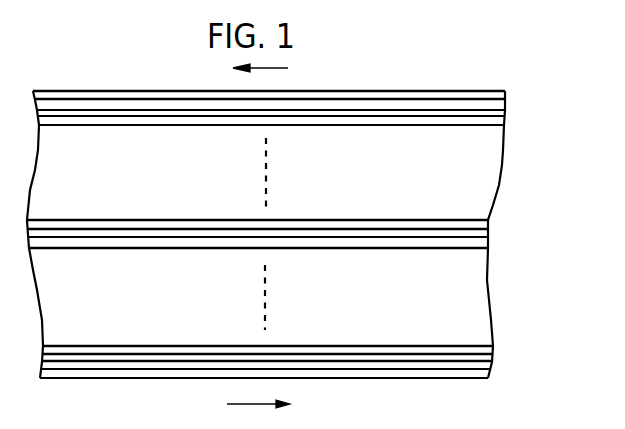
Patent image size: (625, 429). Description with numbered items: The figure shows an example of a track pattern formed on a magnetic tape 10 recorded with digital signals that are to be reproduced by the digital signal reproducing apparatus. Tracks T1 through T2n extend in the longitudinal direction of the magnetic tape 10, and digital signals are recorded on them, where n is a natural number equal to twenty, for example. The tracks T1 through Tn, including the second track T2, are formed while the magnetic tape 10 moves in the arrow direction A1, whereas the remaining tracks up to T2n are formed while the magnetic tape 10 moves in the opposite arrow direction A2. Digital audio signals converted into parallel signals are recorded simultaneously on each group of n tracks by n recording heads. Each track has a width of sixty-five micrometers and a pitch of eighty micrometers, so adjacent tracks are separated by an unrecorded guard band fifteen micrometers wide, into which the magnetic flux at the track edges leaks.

The magnetic tape 10 is at (404, 83).
The track T2n is at (489, 224).
The track Tn is at (488, 245).
The track T2 is at (492, 349).
The track T1 is at (488, 364).
The arrow direction A1 is at (246, 405).
The arrow direction A2 is at (273, 70).